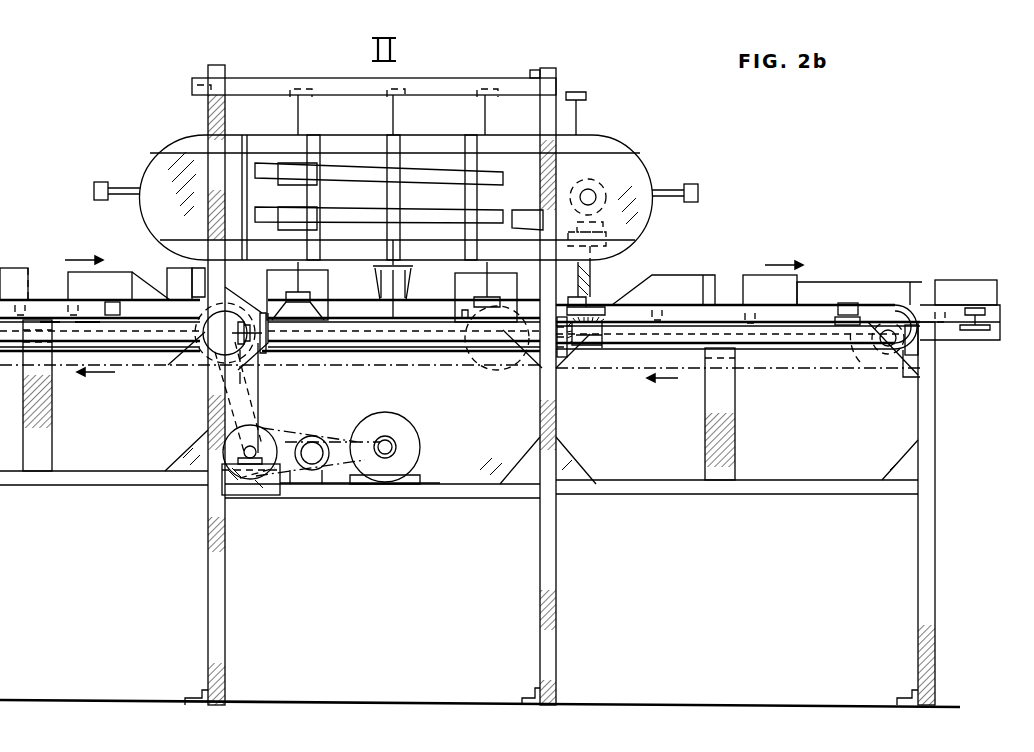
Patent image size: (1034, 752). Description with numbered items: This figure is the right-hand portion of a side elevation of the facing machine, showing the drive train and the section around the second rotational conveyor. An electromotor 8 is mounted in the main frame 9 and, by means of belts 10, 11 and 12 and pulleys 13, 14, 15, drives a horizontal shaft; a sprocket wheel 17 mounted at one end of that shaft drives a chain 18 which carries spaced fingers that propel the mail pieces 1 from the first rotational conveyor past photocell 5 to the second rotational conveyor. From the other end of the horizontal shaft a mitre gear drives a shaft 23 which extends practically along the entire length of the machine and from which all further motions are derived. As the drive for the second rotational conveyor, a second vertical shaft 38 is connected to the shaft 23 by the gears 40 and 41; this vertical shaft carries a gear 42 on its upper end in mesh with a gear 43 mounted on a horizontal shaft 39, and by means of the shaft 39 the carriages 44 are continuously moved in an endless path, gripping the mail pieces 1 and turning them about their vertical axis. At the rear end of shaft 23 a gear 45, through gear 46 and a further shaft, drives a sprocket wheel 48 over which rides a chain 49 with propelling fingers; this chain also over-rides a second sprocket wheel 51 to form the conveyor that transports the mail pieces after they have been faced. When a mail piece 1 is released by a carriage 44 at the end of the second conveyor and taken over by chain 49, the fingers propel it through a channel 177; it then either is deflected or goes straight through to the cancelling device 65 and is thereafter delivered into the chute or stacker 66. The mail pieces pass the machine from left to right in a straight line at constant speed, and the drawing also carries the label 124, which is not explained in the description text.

The mail piece 1 is at (18, 268).
The carrier section 124 is at (44, 268).
The photocell 5 is at (118, 315).
The electromotor 8 is at (392, 426).
The main frame 9 is at (455, 498).
The belt 10 is at (325, 436).
The belt 11 is at (292, 486).
The belt 12 is at (258, 399).
The pulley 13 is at (324, 486).
The pulley 14 is at (233, 496).
The pulley 15 is at (262, 358).
The sprocket wheel 17 is at (241, 377).
The chain 18 is at (68, 372).
The shaft 23 is at (166, 352).
The second vertical shaft 38 is at (592, 270).
The horizontal shaft 39 is at (590, 196).
The gear 40 is at (592, 346).
The gear 41 is at (578, 350).
The gear 42 is at (603, 232).
The gear 43 is at (585, 182).
The carriage 44 is at (120, 185).
The gear 45 is at (906, 358).
The gear 46 is at (880, 355).
The sprocket wheel 48 is at (858, 366).
The chain 49 is at (758, 370).
The second sprocket wheel 51 is at (483, 357).
The cancelling device 65 is at (840, 303).
The chute or stacker 66 is at (975, 331).
The channel 177 is at (722, 300).